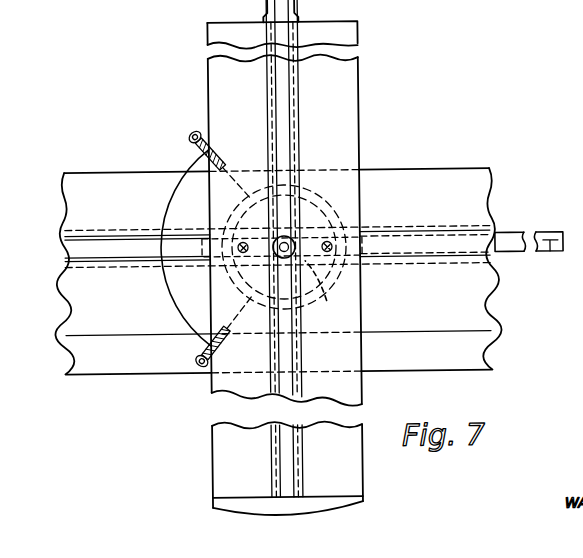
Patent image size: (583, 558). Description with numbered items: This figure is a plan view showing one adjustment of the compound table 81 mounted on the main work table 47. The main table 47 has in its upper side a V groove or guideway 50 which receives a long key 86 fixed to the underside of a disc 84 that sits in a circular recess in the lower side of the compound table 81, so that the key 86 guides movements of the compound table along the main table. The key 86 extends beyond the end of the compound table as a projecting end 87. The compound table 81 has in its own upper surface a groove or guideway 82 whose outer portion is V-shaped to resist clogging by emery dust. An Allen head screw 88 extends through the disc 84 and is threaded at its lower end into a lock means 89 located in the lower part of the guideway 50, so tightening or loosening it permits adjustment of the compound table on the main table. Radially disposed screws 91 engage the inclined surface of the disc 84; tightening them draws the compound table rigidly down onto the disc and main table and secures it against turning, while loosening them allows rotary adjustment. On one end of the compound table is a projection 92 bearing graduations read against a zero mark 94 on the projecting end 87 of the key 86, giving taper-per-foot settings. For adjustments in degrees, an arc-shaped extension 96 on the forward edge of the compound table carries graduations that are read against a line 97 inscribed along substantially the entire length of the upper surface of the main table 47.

The main work table 47 is at (483, 130).
The V groove or guideway 50 is at (123, 258).
The compound table 81 is at (198, 80).
The groove or guideway 82 is at (288, 112).
The disc 84 is at (318, 205).
The long key 86 is at (502, 237).
The projecting end of the key 87 is at (553, 230).
The Allen head screw 88 is at (288, 245).
The lock means 89 is at (329, 290).
The radially disposed screws 91 is at (198, 133).
The projection 92 is at (332, 507).
The zero mark 94 is at (551, 255).
The arc-shaped extension 96 is at (192, 183).
The line 97 is at (487, 330).